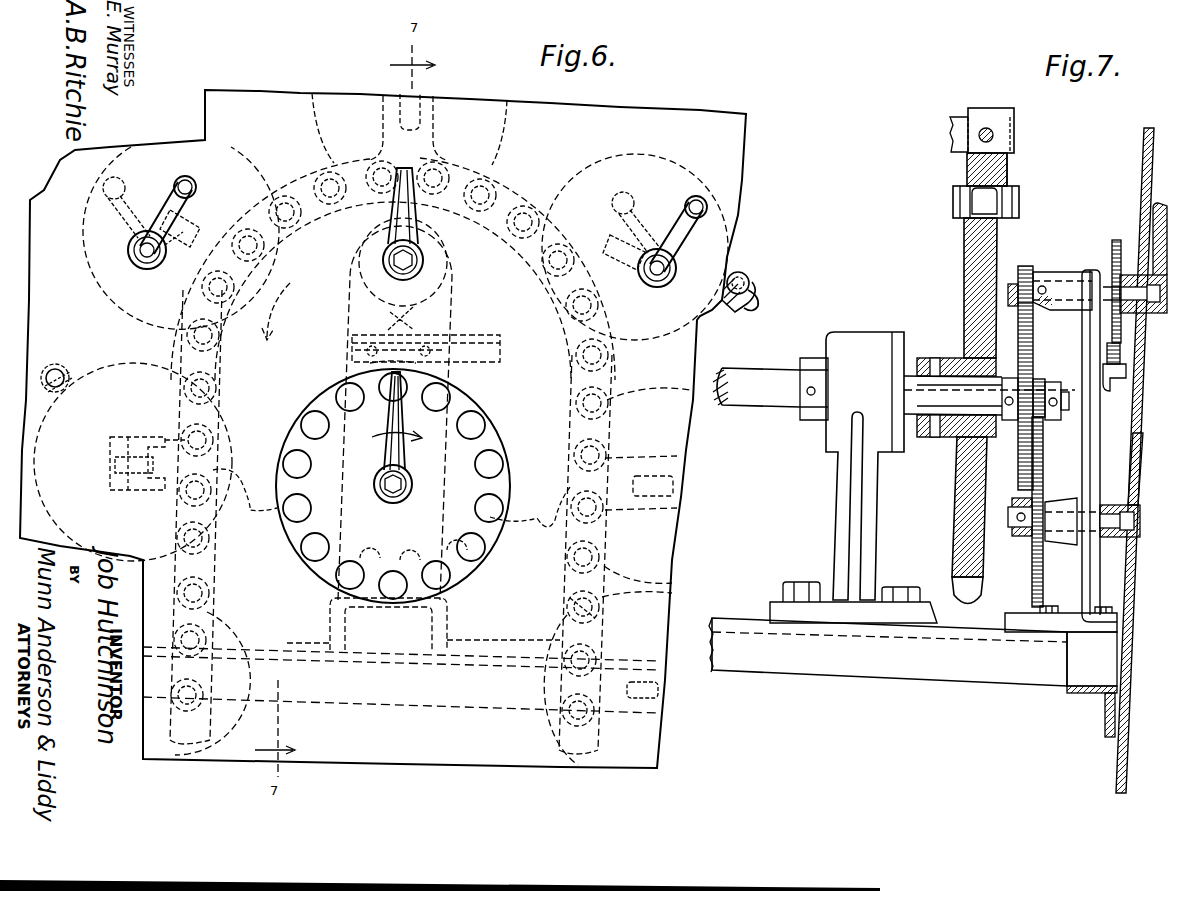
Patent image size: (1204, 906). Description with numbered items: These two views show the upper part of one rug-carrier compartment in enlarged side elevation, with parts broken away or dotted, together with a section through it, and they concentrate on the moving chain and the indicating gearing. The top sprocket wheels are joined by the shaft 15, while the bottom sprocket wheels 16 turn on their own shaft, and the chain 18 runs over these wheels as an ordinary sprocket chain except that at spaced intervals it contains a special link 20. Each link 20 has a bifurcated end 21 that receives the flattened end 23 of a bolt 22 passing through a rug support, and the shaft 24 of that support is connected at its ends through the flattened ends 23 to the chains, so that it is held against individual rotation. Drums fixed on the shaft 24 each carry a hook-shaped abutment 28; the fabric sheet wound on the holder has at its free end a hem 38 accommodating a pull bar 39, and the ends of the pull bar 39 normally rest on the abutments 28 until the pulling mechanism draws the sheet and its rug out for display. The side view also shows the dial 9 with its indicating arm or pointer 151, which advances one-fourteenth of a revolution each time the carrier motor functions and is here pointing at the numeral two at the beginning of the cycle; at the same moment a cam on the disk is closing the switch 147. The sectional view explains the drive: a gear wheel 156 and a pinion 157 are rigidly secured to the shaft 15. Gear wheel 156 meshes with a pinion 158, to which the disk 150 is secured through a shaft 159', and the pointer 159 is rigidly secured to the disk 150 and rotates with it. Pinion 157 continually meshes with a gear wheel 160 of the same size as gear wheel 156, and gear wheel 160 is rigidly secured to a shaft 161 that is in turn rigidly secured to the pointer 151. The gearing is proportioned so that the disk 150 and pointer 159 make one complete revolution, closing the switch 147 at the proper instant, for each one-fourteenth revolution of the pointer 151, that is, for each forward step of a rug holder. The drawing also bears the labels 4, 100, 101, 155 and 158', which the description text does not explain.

In FIG. 6, the base plate 4 is at (560, 122).
In FIG. 7, the base plate 4 is at (1128, 692).
In FIG. 6, the dial 9 is at (466, 565).
In FIG. 7, the dial 9 is at (1132, 625).
In FIG. 7, the shaft 15 is at (752, 372).
In FIG. 6, the bottom sprocket wheels 16 is at (547, 528).
In FIG. 7, the bottom sprocket wheels 16 is at (962, 272).
In FIG. 6, the chain 18 is at (566, 611).
In FIG. 7, the chain 18 is at (952, 200).
In FIG. 6, the special link 20 is at (164, 445).
In FIG. 7, the special link 20 is at (1008, 170).
In FIG. 6, the bifurcated end 21 is at (128, 492).
In FIG. 7, the bifurcated end 21 is at (1006, 114).
In FIG. 7, the bolt 22 is at (986, 128).
In FIG. 6, the flattened end 23 is at (124, 445).
In FIG. 7, the flattened end 23 is at (1014, 135).
In FIG. 7, the shaft 24 is at (958, 118).
In FIG. 6, the hook-shaped abutment 28 is at (752, 304).
In FIG. 6, the hem 38 is at (743, 272).
In FIG. 6, the pull bar 39 is at (748, 288).
In FIG. 6, the select lever 100 is at (160, 228).
In FIG. 6, the start lever 101 is at (680, 232).
In FIG. 6, the switch 147 is at (428, 337).
In FIG. 7, the switch 147 is at (1128, 368).
In FIG. 6, the disk 150 is at (454, 255).
In FIG. 7, the disk 150 is at (1116, 243).
In FIG. 6, the indicating arm 151 is at (388, 457).
In FIG. 7, the indicating arm 151 is at (1148, 488).
In FIG. 7, the block 155 is at (1122, 348).
In FIG. 7, the gear wheel 156 is at (1034, 354).
In FIG. 7, the pinion 157 is at (1040, 380).
In FIG. 7, the pinion 158 is at (1042, 362).
In FIG. 7, the hub 158' is at (1046, 277).
In FIG. 6, the pointer 159 is at (389, 206).
In FIG. 7, the pointer 159 is at (1153, 258).
In FIG. 6, the shaft 159' is at (404, 285).
In FIG. 7, the gear wheel 160 is at (1043, 482).
In FIG. 7, the shaft 161 is at (1010, 530).